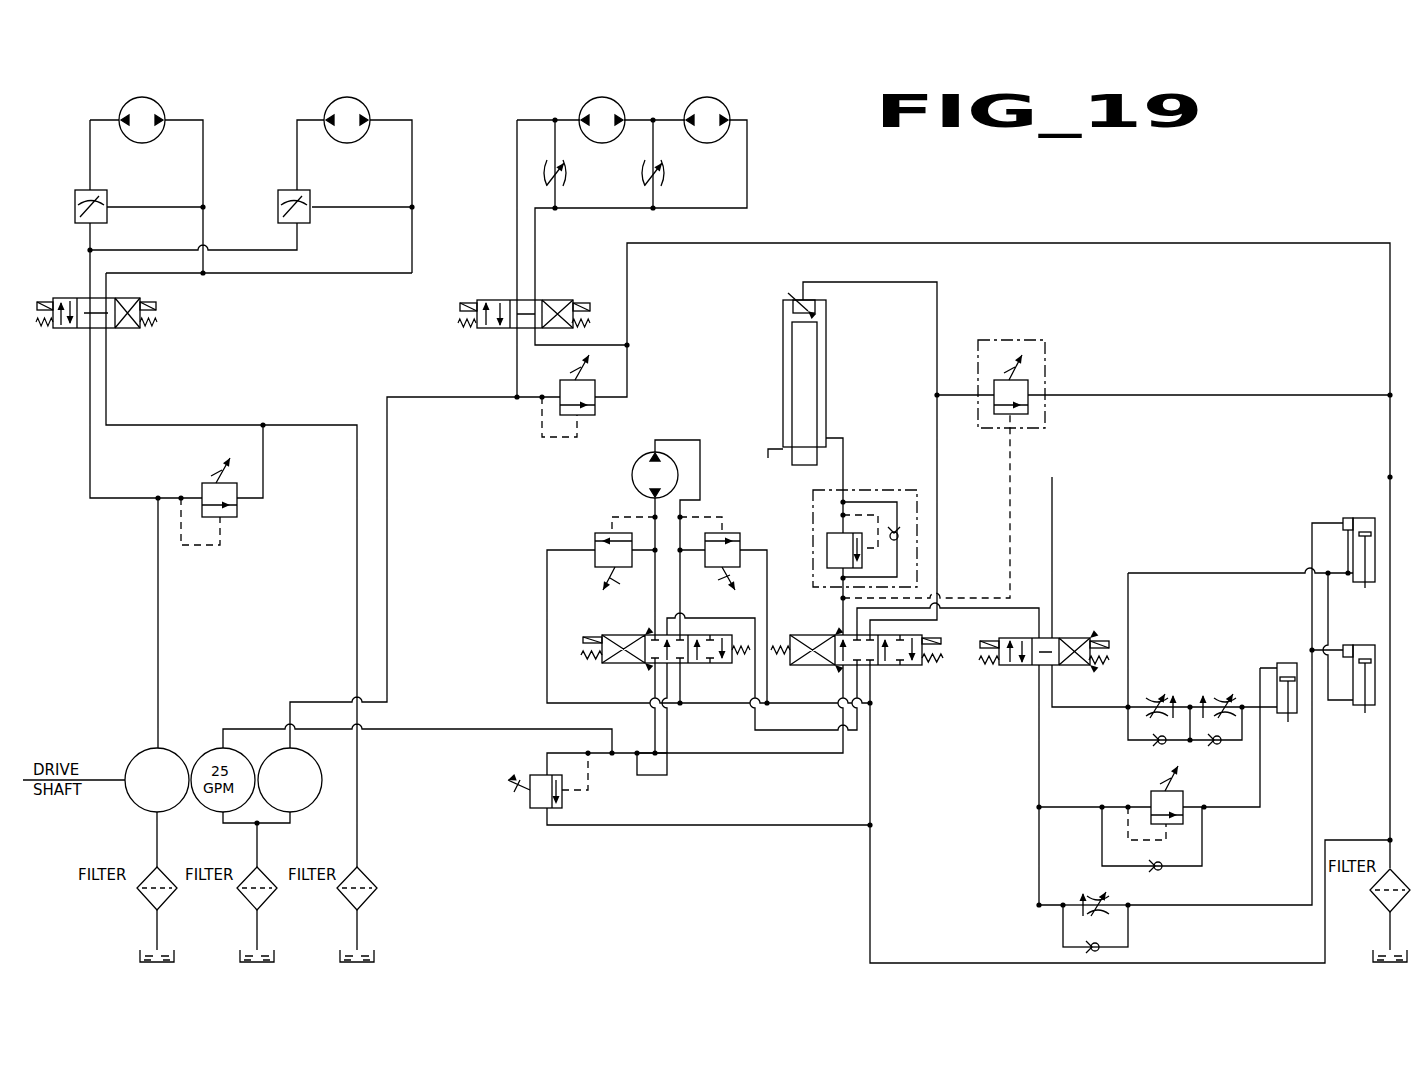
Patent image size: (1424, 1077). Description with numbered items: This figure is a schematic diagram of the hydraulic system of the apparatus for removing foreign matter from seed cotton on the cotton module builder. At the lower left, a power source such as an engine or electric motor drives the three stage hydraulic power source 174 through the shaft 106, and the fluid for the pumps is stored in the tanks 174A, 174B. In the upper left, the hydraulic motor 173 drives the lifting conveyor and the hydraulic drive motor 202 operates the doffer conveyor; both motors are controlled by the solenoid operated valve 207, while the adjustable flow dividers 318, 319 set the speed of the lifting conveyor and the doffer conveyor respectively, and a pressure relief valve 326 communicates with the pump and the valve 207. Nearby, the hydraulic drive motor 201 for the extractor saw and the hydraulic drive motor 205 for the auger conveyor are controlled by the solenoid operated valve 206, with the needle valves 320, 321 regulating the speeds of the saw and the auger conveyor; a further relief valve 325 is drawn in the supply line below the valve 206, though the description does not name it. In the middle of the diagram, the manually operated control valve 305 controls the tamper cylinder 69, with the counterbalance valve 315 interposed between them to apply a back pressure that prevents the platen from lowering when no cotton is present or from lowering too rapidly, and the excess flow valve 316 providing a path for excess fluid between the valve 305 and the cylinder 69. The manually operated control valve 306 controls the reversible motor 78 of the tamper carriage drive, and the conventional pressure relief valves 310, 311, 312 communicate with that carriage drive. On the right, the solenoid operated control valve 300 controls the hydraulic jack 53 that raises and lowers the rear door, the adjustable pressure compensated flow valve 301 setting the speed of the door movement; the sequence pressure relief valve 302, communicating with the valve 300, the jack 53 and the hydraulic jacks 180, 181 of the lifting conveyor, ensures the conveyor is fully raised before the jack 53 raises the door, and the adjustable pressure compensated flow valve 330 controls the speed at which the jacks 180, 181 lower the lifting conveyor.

The hydraulic motor 173 is at (158, 103).
The hydraulic drive motor 202 is at (365, 106).
The adjustable flow divider 318 is at (104, 193).
The adjustable flow divider 319 is at (306, 193).
The solenoid operated valve 207 is at (124, 330).
The pressure relief valve 326 is at (232, 520).
The shaft 106 is at (110, 778).
The hydraulic power source 174 is at (315, 798).
The tank 174A is at (140, 957).
The tank 174B is at (240, 957).
The hydraulic drive motor 201 is at (590, 102).
The hydraulic drive motor 205 is at (745, 94).
The needle valve 320 is at (560, 174).
The needle valve 321 is at (660, 173).
The solenoid operated valve 206 is at (493, 300).
The relief valve 325 is at (598, 405).
The cylinder 69 is at (785, 352).
The reversible motor 78 is at (632, 475).
The pressure relief valve 311 is at (603, 533).
The pressure relief valve 312 is at (730, 533).
The counterbalance valve 315 is at (827, 537).
The manually operated control valve 306 is at (630, 667).
The manually operated control valve 305 is at (890, 667).
The solenoid operated control valve 300 is at (1013, 667).
The pressure relief valve 310 is at (540, 810).
The excess flow valve 316 is at (1012, 416).
The hydraulic jack 180 is at (1376, 519).
The hydraulic jack 181 is at (1368, 713).
The hydraulic jack 53 is at (1283, 663).
The adjustable pressure compensated flow valve 301 is at (1194, 702).
The sequence pressure relief valve 302 is at (1185, 795).
The adjustable pressure compensated flow valve 330 is at (1130, 938).